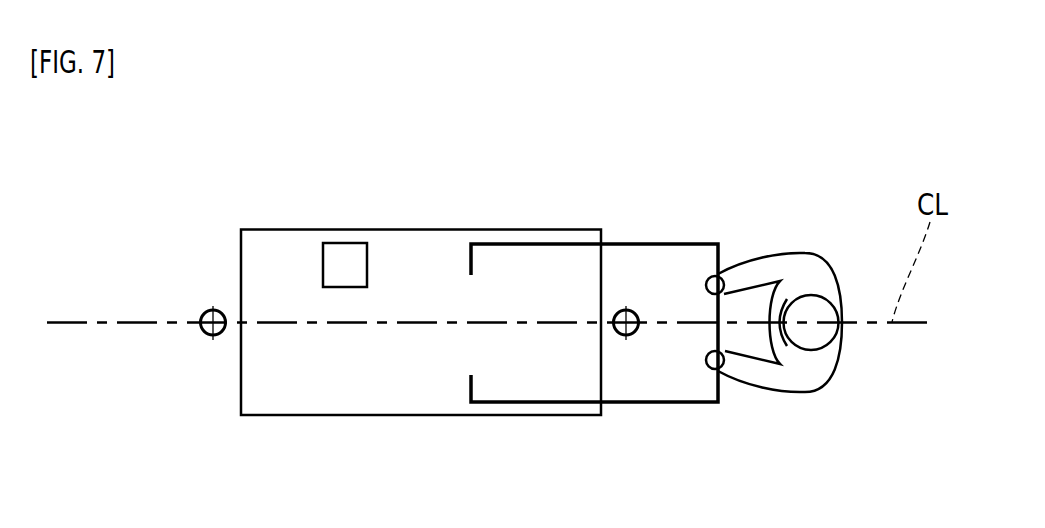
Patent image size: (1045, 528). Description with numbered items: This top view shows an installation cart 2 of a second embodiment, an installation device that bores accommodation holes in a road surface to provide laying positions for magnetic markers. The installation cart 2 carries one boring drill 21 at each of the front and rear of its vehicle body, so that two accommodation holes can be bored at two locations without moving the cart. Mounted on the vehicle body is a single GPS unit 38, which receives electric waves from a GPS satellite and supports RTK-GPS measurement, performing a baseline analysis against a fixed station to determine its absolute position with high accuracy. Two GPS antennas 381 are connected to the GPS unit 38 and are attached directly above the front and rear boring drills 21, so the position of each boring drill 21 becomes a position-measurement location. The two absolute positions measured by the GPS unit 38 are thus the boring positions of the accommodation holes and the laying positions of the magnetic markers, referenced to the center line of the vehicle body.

The installation cart 2 is at (272, 250).
The GPS unit 38 is at (345, 258).
The GPS antenna 381 is at (212, 311).
The boring drill 21 is at (213, 336).